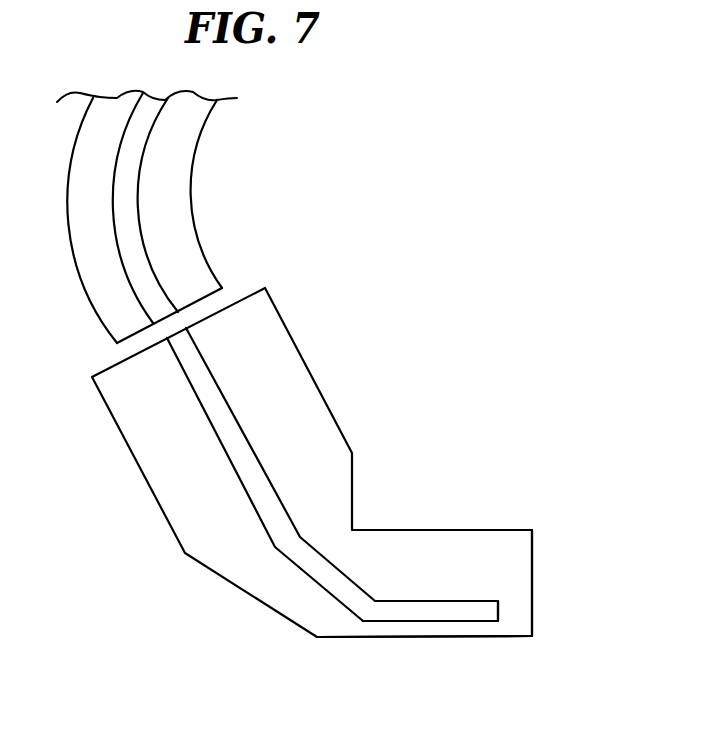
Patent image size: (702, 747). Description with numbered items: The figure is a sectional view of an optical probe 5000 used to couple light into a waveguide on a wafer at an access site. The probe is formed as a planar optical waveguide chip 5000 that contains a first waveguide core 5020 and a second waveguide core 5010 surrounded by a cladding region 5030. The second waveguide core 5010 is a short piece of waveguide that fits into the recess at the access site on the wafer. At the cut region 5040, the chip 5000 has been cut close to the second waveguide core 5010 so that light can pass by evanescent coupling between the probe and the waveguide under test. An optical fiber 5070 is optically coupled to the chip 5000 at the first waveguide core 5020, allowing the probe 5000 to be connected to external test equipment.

The optical probe 5000 is at (364, 326).
The second waveguide core 5010 is at (408, 613).
The first waveguide core 5020 is at (228, 430).
The cladding region 5030 is at (502, 573).
The cut region 5040 is at (506, 653).
The optical fiber 5070 is at (200, 199).